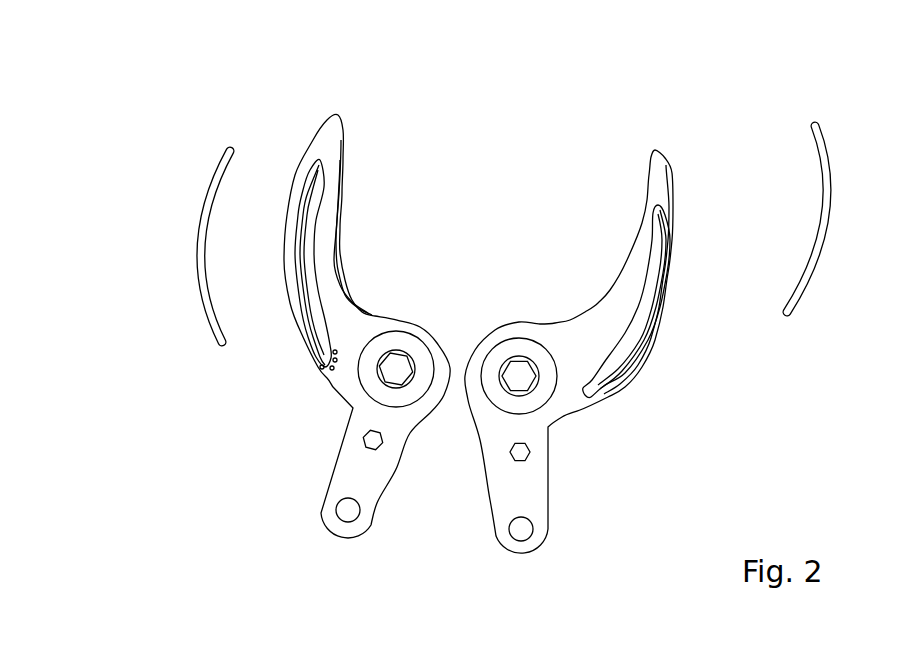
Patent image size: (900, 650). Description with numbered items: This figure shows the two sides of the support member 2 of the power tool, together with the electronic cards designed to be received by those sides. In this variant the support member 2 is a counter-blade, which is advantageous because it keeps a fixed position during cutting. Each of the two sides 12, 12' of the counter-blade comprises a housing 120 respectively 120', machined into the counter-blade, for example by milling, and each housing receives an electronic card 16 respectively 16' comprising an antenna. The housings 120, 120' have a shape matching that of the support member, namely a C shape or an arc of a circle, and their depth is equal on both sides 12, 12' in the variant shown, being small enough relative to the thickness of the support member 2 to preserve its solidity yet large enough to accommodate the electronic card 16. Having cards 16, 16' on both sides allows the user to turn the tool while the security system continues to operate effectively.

The support member 2 is at (434, 247).
The side 12 is at (354, 294).
The side 12' is at (603, 327).
The housing 120 is at (360, 263).
The housing 120' is at (675, 301).
The electronic card 16 is at (190, 287).
The electronic card 16' is at (827, 266).